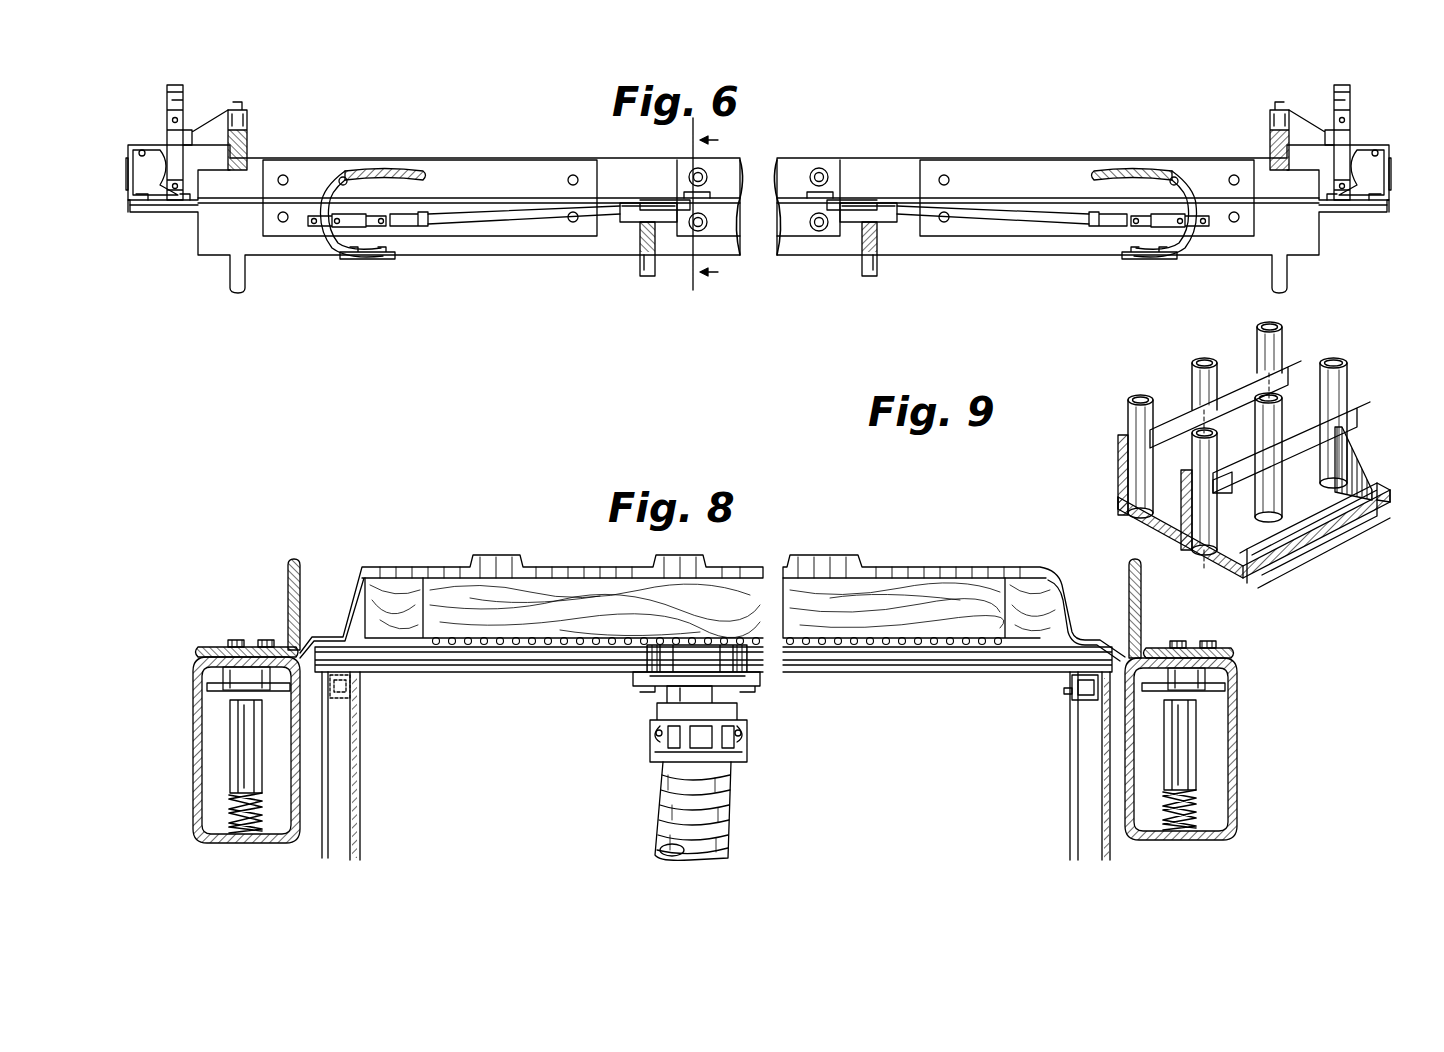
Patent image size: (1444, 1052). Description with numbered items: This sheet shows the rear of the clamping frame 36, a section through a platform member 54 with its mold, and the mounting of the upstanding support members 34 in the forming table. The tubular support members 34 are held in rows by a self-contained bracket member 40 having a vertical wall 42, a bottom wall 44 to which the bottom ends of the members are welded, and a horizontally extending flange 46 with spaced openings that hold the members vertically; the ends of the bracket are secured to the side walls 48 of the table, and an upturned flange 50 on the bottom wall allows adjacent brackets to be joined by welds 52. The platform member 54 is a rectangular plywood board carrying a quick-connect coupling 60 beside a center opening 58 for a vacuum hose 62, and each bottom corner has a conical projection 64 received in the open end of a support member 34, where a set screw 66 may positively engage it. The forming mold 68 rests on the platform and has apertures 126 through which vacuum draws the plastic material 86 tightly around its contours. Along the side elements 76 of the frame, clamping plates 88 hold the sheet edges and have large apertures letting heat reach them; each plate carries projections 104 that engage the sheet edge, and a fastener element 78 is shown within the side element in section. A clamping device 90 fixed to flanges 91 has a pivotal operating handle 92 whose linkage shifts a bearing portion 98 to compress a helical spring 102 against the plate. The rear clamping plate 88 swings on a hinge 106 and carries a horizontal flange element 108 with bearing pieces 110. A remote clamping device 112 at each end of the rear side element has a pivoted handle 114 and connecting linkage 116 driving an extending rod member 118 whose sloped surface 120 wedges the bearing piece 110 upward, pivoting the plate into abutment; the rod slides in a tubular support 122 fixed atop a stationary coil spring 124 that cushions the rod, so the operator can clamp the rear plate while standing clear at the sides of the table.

In FIG. 9, the upstanding support member 34 is at (1190, 378).
In FIG. 8, the upstanding support member 34 is at (345, 746).
In FIG. 8, the clamping frame 36 is at (1248, 708).
In FIG. 9, the bracket member 40 is at (1185, 540).
In FIG. 9, the vertical wall 42 is at (1118, 465).
In FIG. 9, the bottom wall 44 is at (1228, 566).
In FIG. 9, the horizontally extending flange 46 is at (1243, 372).
In FIG. 9, the side walls 48 is at (1390, 480).
In FIG. 9, the upturned flange 50 is at (1255, 578).
In FIG. 9, the welds 52 is at (1320, 492).
In FIG. 8, the platform member 54 is at (918, 665).
In FIG. 8, the center opening 58 is at (652, 686).
In FIG. 8, the quick-connect coupling 60 is at (658, 712).
In FIG. 8, the vacuum hose 62 is at (728, 815).
In FIG. 8, the projection 64 is at (356, 682).
In FIG. 8, the set screws 66 is at (1065, 694).
In FIG. 8, the forming mold 68 is at (385, 600).
In FIG. 6, the side elements 76 is at (267, 250).
In FIG. 8, the side elements 76 is at (1235, 760).
In FIG. 8, the bolt 78 is at (246, 740).
In FIG. 8, the plastic material 86 is at (492, 565).
In FIG. 6, the clamping plate 88 is at (612, 165).
In FIG. 8, the clamping plate 88 is at (218, 647).
In FIG. 6, the clamping device 90 is at (122, 133).
In FIG. 6, the flanges 91 is at (168, 213).
In FIG. 6, the pivotal operating handle 92 is at (186, 100).
In FIG. 6, the bearing portion 98 is at (248, 118).
In FIG. 6, the helical spring 102 is at (250, 142).
In FIG. 8, the projections 104 is at (290, 635).
In FIG. 6, the hinge 106 is at (500, 168).
In FIG. 6, the horizontal flange element 108 is at (686, 194).
In FIG. 6, the bearing pieces 110 is at (705, 190).
In FIG. 6, the remote clamping device 112 is at (360, 262).
In FIG. 6, the pivoted handle 114 is at (405, 172).
In FIG. 6, the connecting linkage 116 is at (380, 222).
In FIG. 6, the extending rod member 118 is at (556, 215).
In FIG. 6, the sloped surface 120 is at (715, 208).
In FIG. 6, the tubular support 122 is at (630, 224).
In FIG. 6, the coil spring 124 is at (662, 240).
In FIG. 8, the apertures 126 is at (458, 567).